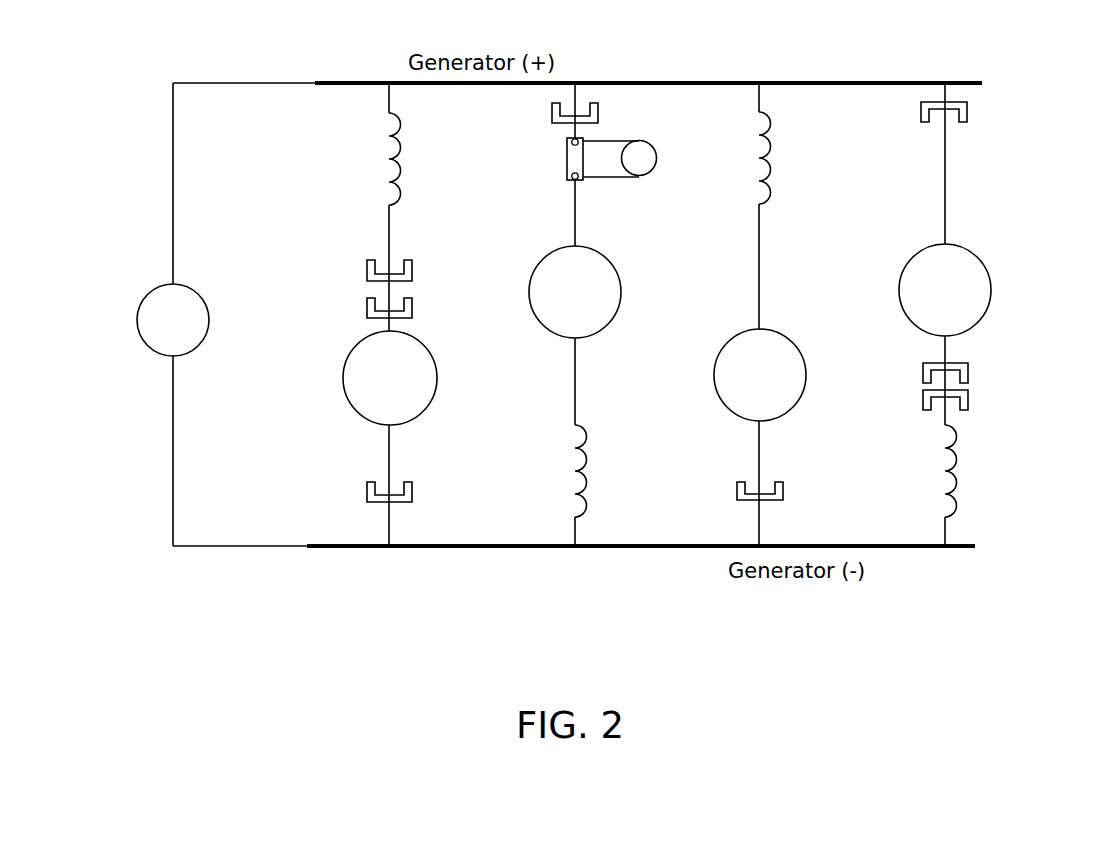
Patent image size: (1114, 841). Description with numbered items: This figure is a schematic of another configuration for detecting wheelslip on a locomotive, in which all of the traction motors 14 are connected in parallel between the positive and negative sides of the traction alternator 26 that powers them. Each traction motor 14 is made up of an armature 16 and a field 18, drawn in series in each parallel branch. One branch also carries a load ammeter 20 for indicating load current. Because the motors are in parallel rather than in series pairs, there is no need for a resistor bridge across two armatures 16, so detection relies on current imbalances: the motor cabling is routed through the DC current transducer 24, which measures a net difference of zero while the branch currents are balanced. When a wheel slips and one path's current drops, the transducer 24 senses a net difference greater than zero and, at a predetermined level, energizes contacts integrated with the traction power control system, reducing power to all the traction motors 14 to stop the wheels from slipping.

The traction motor 14 is at (282, 253).
The armature 16 is at (365, 402).
The field 18 is at (378, 140).
The load ammeter 20 is at (615, 152).
The DC current transducer 24 is at (365, 283).
The traction alternator 26 is at (150, 350).